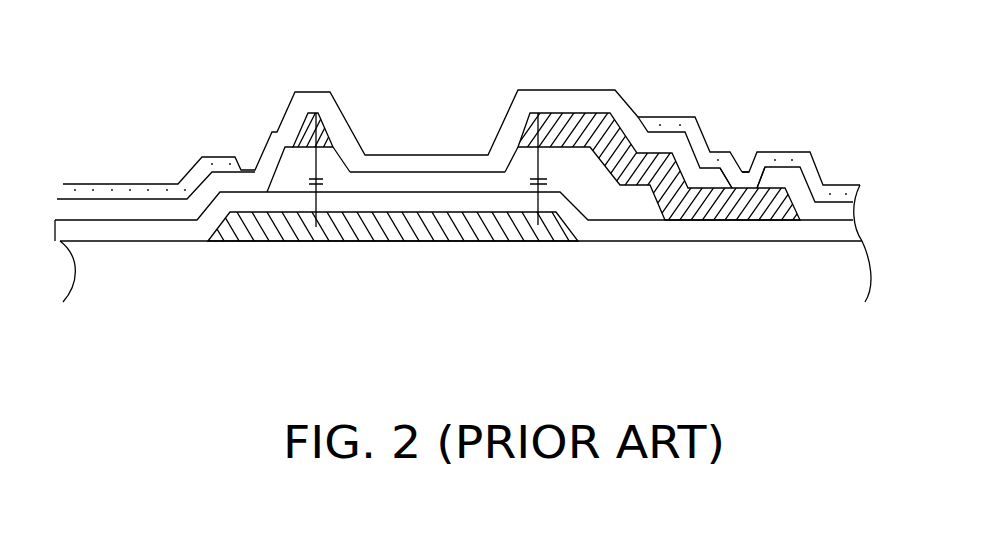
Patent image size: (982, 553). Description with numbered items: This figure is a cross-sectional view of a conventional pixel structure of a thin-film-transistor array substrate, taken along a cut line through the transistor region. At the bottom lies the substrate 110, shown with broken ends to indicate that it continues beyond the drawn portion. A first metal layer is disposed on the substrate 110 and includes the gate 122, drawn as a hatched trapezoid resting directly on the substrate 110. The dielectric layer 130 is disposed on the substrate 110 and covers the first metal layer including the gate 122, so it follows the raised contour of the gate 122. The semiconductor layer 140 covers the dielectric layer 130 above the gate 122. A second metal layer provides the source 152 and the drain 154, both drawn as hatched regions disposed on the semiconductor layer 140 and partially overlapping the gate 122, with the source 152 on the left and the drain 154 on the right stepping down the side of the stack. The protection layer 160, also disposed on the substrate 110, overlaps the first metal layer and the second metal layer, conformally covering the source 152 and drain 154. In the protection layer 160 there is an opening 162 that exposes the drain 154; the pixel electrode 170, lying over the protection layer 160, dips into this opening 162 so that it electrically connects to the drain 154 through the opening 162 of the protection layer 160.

The substrate 110 is at (787, 287).
The gate 122 is at (405, 232).
The dielectric layer 130 is at (713, 233).
The semiconductor layer 140 is at (284, 177).
The source 152 is at (316, 113).
The drain 154 is at (558, 113).
The protection layer 160 is at (343, 128).
The opening 162 is at (760, 177).
The pixel electrode 170 is at (793, 157).